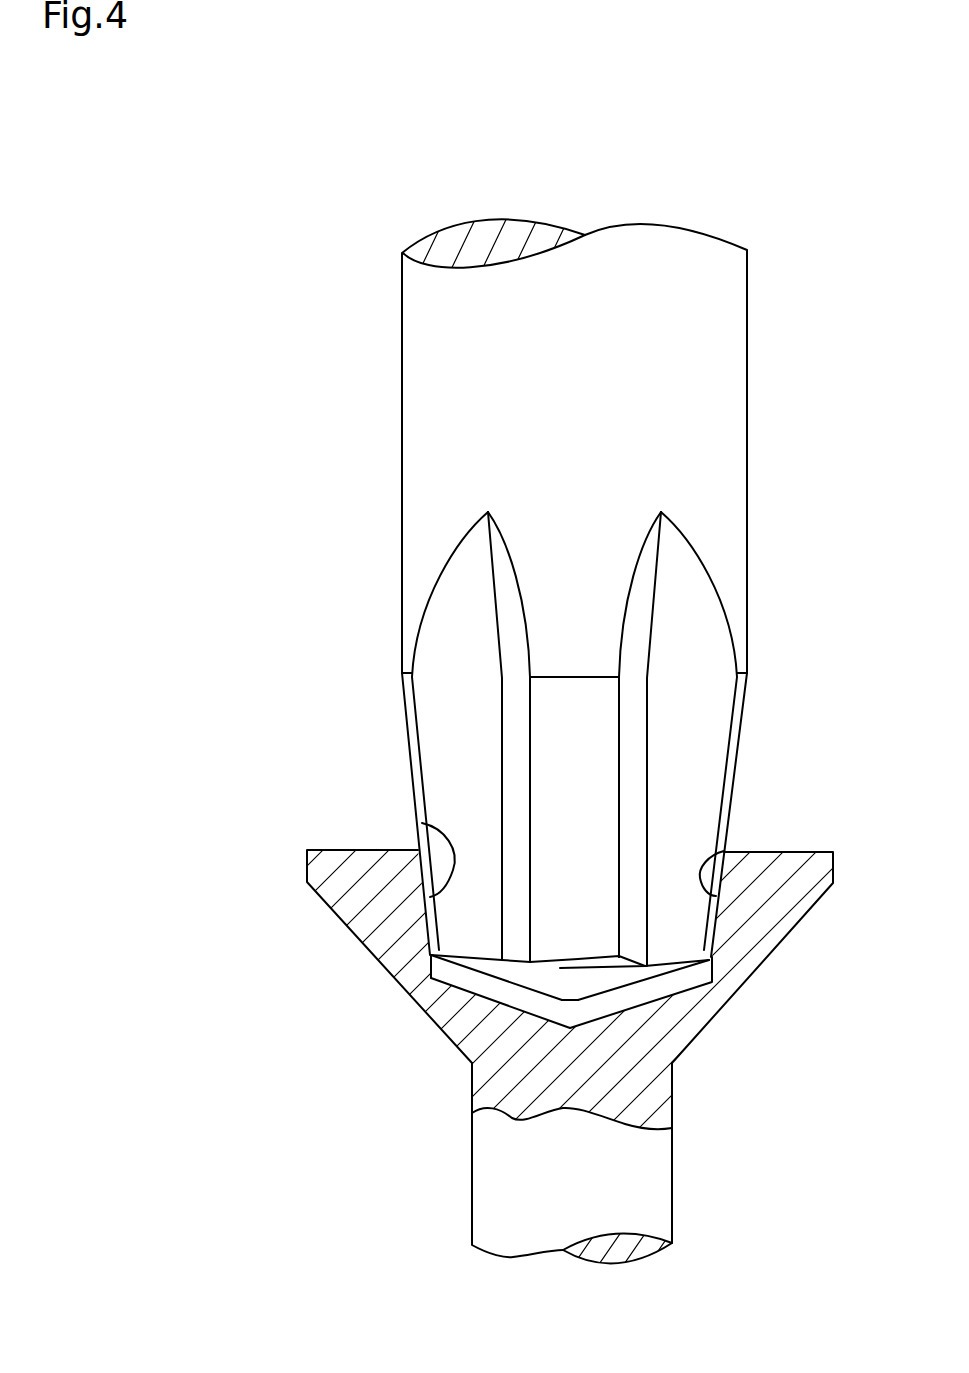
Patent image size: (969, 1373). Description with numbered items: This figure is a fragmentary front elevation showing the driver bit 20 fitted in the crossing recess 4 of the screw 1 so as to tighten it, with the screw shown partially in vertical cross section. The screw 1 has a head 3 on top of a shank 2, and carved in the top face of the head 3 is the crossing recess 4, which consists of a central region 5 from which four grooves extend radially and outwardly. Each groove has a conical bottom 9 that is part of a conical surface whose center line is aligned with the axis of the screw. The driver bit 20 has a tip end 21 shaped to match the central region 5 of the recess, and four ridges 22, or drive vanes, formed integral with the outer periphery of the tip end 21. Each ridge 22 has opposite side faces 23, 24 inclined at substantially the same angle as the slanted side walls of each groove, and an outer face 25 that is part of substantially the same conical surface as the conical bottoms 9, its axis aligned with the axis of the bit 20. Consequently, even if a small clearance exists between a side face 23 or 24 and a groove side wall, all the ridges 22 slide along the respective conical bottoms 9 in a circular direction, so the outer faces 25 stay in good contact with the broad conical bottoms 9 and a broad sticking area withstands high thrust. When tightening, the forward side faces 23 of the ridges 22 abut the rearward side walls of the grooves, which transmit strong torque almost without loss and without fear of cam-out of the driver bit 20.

The screw 1 is at (302, 838).
The shank 2 is at (652, 1197).
The head 3 is at (788, 903).
The crossing recess 4 is at (443, 968).
The central region 5 is at (557, 1010).
The conical bottom 9 is at (422, 823).
The driver bit 20 is at (747, 416).
The tip end 21 is at (590, 983).
The ridge 22 is at (477, 958).
The side face 23 is at (512, 835).
The side face 24 is at (633, 843).
The outer face 25 is at (410, 760).